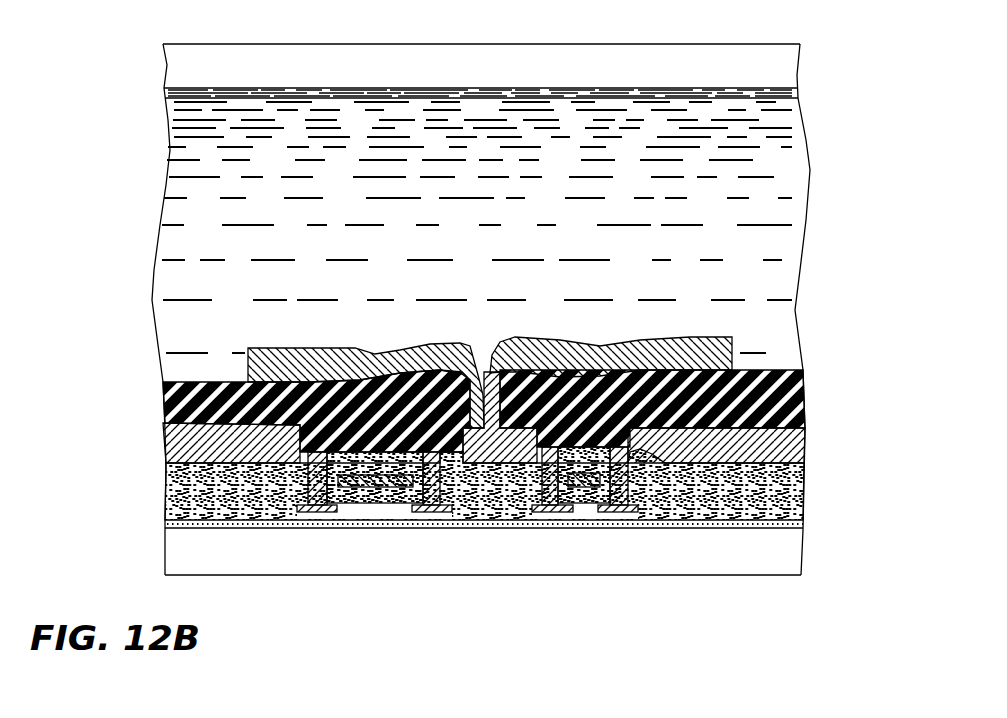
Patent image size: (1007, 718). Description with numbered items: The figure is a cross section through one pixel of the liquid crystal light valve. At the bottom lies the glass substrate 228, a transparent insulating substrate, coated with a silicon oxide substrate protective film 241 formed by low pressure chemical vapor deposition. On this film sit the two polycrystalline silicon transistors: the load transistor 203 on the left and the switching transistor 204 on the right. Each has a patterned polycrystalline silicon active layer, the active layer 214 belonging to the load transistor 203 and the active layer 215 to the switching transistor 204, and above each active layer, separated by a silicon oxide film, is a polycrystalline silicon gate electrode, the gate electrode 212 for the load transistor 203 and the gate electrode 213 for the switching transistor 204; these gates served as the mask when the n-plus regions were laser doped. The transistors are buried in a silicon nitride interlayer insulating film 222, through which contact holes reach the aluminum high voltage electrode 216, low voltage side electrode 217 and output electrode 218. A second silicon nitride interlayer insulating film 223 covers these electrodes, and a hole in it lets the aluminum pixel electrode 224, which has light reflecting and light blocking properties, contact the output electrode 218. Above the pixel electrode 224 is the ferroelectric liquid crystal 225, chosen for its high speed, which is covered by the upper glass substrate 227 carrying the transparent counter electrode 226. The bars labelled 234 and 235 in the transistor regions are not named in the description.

The load transistor 203 is at (450, 623).
The switching transistor 204 is at (643, 623).
The gate electrode 212 is at (405, 518).
The gate electrode 213 is at (596, 500).
The active layer 214 is at (343, 515).
The active layer 215 is at (563, 513).
The high voltage electrode 216 is at (182, 445).
The low voltage side electrode 217 is at (795, 455).
The output electrode 218 is at (481, 430).
The interlayer insulating film 222 is at (790, 487).
The interlayer insulating film 223 is at (800, 407).
The pixel electrode 224 is at (733, 342).
The liquid crystal 225 is at (778, 192).
The counter electrode 226 is at (775, 95).
The glass substrate 227 is at (777, 62).
The glass substrate 228 is at (702, 558).
The gate electrode 234 is at (370, 517).
The gate electrode 235 is at (582, 505).
The substrate protective film 241 is at (795, 525).